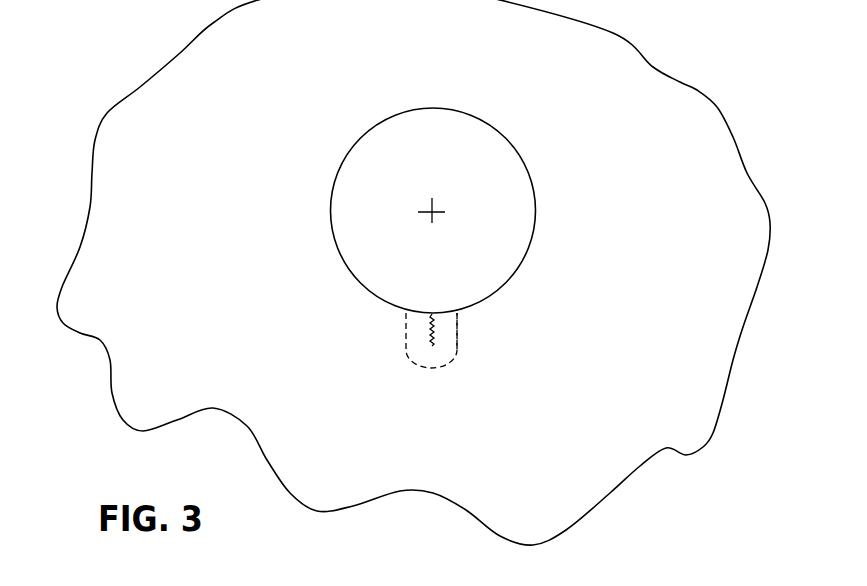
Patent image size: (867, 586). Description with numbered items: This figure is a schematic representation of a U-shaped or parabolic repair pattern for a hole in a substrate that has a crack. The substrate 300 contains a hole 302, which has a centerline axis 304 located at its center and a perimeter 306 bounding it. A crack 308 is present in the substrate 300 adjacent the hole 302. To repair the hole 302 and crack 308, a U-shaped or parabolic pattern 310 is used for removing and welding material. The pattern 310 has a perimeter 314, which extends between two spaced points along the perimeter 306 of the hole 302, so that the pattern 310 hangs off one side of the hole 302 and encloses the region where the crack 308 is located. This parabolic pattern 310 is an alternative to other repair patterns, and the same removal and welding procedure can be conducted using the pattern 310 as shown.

The substrate 300 is at (690, 105).
The hole 302 is at (545, 208).
The centerline axis 304 is at (443, 208).
The perimeter 306 is at (336, 179).
The crack 308 is at (430, 343).
The U-shaped or parabolic pattern 310 is at (460, 361).
The perimeter 314 is at (458, 338).